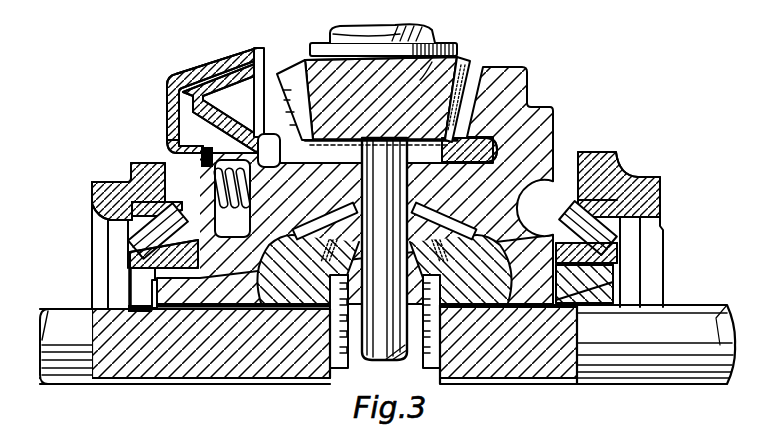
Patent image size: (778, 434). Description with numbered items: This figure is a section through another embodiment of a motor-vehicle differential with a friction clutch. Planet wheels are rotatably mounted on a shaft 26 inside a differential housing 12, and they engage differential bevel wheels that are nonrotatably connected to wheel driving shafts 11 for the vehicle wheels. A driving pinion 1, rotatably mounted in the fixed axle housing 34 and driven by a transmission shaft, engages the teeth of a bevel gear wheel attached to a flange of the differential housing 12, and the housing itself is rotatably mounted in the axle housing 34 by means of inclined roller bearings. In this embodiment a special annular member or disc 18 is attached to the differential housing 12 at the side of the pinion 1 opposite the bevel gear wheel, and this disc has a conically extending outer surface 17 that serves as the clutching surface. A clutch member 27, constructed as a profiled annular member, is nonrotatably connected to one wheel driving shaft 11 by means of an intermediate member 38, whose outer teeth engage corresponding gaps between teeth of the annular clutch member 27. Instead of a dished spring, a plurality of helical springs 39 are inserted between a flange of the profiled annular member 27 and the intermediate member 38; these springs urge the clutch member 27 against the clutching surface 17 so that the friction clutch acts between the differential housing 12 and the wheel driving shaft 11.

The driving pinion 1 is at (445, 45).
The wheel driving shaft 11 is at (232, 362).
The differential housing 12 is at (545, 129).
The conically extending outer surface 17 is at (213, 77).
The annular member or disc 18 is at (240, 125).
The shaft 26 is at (374, 188).
The clutch member 27 is at (175, 108).
The axle housing 34 is at (104, 196).
The intermediate member 38 is at (137, 283).
The helical springs 39 is at (201, 168).